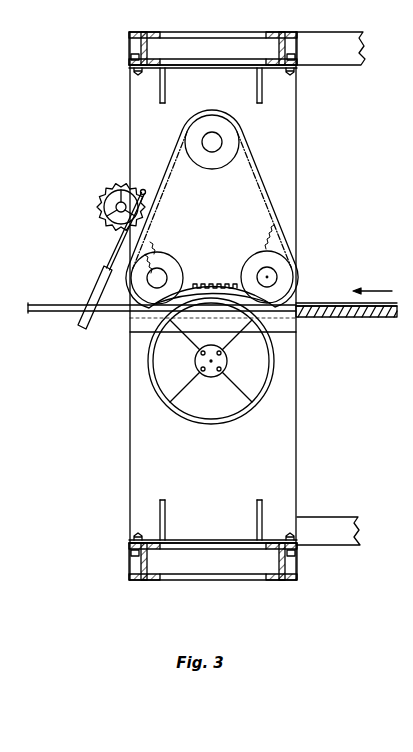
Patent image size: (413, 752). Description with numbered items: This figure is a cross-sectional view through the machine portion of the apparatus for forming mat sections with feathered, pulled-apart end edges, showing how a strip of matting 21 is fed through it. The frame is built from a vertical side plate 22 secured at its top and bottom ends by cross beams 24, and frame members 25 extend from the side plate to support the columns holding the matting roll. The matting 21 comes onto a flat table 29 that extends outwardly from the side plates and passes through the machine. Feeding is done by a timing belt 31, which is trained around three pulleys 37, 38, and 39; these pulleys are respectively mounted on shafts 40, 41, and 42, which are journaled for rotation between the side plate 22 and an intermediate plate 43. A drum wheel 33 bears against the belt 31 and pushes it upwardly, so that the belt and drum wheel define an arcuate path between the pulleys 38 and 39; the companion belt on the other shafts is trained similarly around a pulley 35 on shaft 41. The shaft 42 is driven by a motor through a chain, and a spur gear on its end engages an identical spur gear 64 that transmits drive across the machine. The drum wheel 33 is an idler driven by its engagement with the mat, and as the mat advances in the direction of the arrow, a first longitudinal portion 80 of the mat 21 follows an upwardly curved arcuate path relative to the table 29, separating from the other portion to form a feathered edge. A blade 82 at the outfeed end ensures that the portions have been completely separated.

The strip of matting 21 is at (318, 303).
The side plate 22 is at (283, 325).
The cross beams 24 is at (273, 32).
The frame members 25 is at (335, 65).
The flat table 29 is at (357, 318).
The timing belt 31 is at (263, 186).
The drum wheel 33 is at (237, 419).
The pulley 35 is at (243, 255).
The pulley 37 is at (217, 169).
The pulley 38 is at (259, 254).
The pulley 39 is at (165, 268).
The shaft 40 is at (215, 130).
The shaft 41 is at (277, 273).
The shaft 42 is at (159, 268).
The intermediate plate 43 is at (288, 143).
The spur gear 64 is at (113, 184).
The first longitudinal portion 80 is at (211, 282).
The blade 82 is at (92, 292).